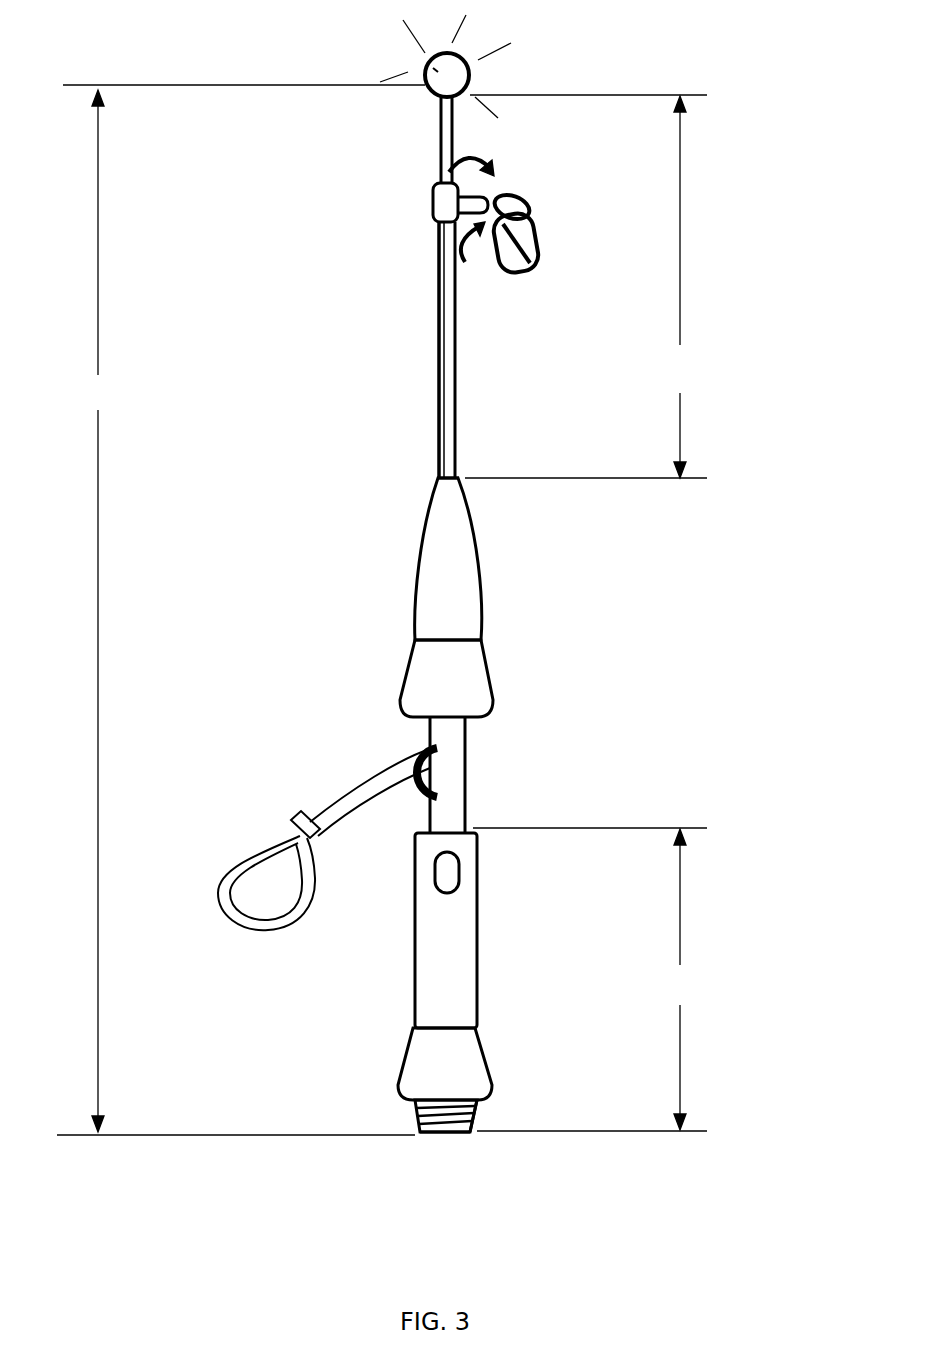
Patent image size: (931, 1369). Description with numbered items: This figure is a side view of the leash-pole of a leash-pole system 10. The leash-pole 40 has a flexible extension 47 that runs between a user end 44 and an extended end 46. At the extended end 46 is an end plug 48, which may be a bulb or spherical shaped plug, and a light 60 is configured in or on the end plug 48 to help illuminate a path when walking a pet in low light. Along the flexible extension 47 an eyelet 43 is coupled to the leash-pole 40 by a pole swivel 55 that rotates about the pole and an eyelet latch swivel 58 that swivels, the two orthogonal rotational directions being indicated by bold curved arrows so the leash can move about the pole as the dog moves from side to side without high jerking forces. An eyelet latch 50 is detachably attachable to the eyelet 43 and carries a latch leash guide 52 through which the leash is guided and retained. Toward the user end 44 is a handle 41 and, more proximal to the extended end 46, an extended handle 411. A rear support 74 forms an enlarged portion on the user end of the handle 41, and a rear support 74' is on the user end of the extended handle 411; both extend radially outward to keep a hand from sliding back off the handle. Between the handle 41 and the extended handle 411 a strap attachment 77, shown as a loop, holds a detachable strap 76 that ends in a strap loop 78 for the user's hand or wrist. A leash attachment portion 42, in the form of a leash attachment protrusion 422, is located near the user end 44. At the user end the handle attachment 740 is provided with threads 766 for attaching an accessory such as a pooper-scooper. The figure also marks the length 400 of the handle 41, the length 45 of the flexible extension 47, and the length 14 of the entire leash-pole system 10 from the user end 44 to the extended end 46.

The leash-pole system 10 is at (185, 75).
The length of the entire leash-pole system 14 is at (101, 611).
The leash-pole 40 is at (452, 272).
The handle 41 is at (432, 988).
The leash attachment portion 42 is at (455, 885).
The eyelet 43 is at (518, 195).
The user end 44 is at (432, 1135).
The length of the flexible extension 45 is at (586, 287).
The extended end 46 is at (440, 100).
The flexible extension 47 is at (446, 397).
The end plug 48 is at (425, 62).
The eyelet latch 50 is at (540, 235).
The latch leash guide 52 is at (538, 262).
The pole swivel 55 is at (446, 207).
The eyelet latch swivel 58 is at (478, 197).
The light 60 is at (462, 48).
The rear support 74 is at (385, 1082).
The rear support 74' is at (498, 697).
The strap 76 is at (335, 798).
The strap attachment 77 is at (428, 750).
The strap loop 78 is at (258, 925).
The length of the handle 400 is at (590, 979).
The extended handle 411 is at (445, 575).
The leash attachment protrusion 422 is at (442, 865).
The handle attachment 740 is at (450, 1140).
The threads 766 is at (470, 1138).